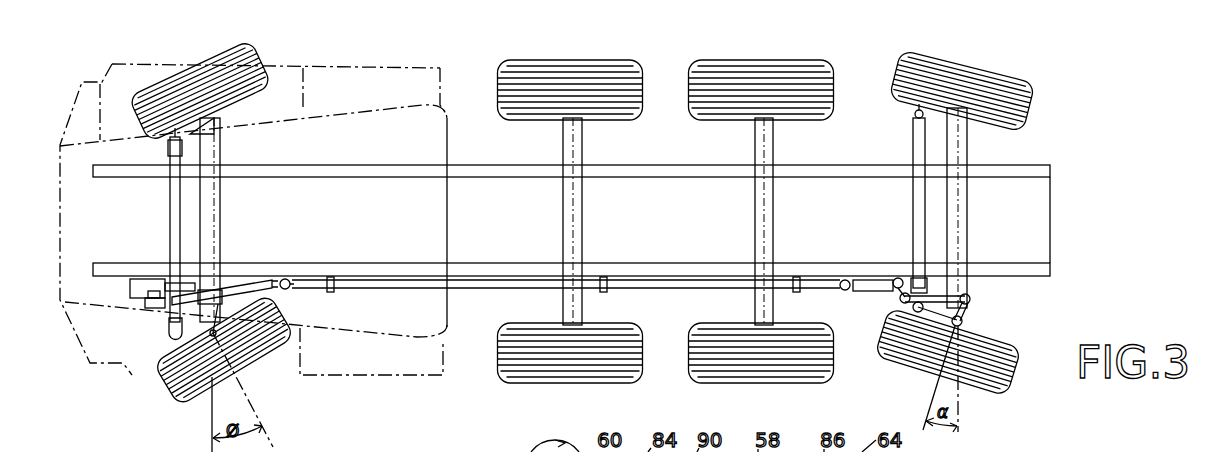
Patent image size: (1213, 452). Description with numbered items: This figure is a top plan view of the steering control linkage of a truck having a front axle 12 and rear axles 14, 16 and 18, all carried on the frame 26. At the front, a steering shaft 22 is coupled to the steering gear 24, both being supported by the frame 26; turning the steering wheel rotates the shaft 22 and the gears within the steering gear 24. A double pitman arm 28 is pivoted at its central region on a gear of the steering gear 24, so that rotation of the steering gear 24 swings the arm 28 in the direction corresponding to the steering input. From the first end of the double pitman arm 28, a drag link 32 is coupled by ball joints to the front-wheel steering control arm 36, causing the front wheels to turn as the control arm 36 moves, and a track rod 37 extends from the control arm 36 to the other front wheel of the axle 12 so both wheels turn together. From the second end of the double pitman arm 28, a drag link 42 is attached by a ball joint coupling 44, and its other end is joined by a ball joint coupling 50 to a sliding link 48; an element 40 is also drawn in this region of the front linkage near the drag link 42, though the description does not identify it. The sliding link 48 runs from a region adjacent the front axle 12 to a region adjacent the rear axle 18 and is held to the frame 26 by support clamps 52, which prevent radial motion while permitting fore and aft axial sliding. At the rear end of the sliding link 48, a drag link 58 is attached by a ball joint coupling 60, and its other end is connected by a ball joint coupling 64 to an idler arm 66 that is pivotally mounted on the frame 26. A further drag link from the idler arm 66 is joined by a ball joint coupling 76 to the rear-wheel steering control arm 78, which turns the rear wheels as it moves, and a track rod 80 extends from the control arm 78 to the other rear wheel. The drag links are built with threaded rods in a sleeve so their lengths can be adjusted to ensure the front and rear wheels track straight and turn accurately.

The front axle 12 is at (218, 190).
The rear axle 14 is at (583, 200).
The rear axle 16 is at (773, 220).
The rear axle 18 is at (957, 195).
The steering shaft 22 is at (186, 280).
The steering gear 24 is at (130, 288).
The frame 26 is at (97, 262).
The double pitman arm 28 is at (147, 312).
The drag link 32 is at (170, 316).
The front-wheel steering control arm 36 is at (216, 336).
The track rod 37 is at (172, 187).
The front steering arm 40 is at (218, 292).
The drag link 42 is at (240, 284).
The ball joint coupling 44 is at (153, 291).
The sliding link 48 is at (497, 290).
The ball joint coupling 50 is at (289, 281).
The support clamp 52 is at (335, 290).
The drag link 58 is at (873, 280).
The ball joint coupling 60 is at (845, 280).
The ball joint coupling 64 is at (899, 278).
The idler arm 66 is at (893, 295).
The ball joint coupling 76 is at (972, 299).
The rear-wheel steering control arm 78 is at (966, 311).
The track rod 80 is at (913, 206).